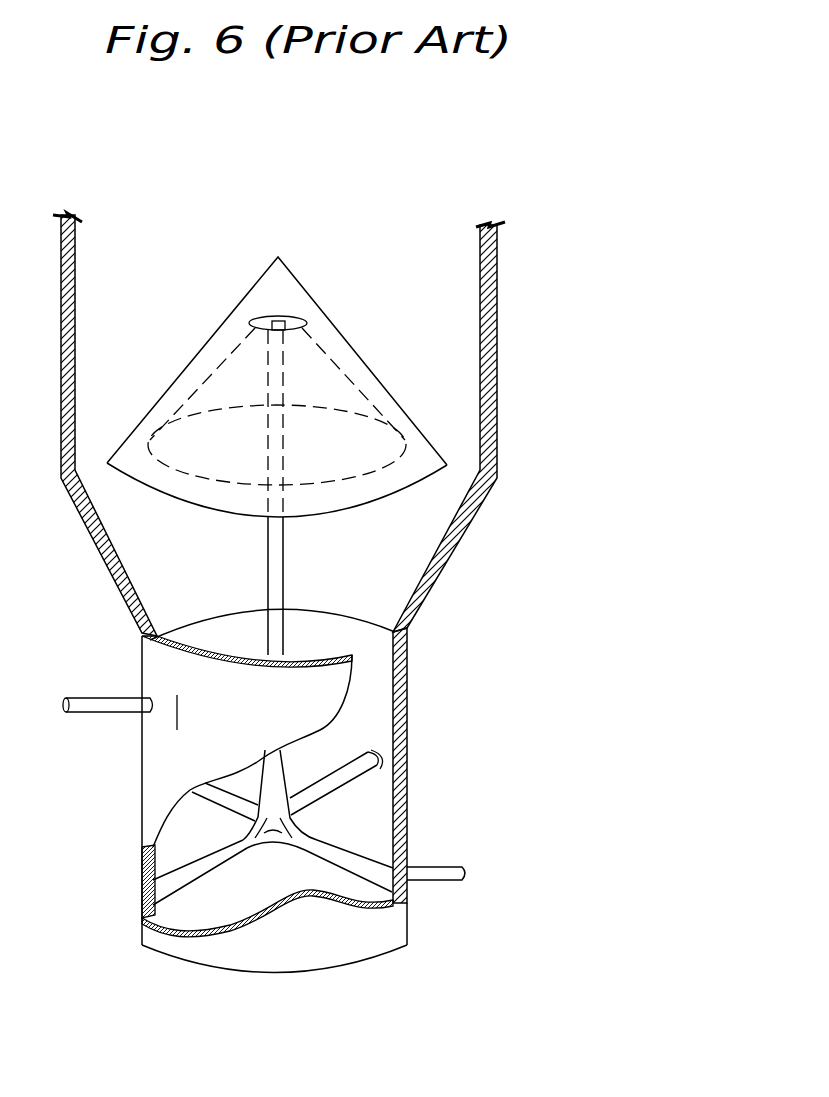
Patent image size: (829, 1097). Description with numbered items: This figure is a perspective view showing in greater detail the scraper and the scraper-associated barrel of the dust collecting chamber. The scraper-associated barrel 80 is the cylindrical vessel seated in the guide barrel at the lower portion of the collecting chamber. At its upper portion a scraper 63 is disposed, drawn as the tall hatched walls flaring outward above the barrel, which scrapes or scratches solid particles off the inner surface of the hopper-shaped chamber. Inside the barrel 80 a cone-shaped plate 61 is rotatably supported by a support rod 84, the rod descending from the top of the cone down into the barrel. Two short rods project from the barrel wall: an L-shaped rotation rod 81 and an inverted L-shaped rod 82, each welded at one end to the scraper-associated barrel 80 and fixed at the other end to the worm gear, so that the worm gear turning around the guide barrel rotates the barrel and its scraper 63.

The cone-shaped plate 61 is at (342, 340).
The scraper 63 is at (498, 432).
The scraper-associated barrel 80 is at (153, 793).
The L-shaped rotation rod 81 is at (428, 870).
The inverted L-shaped rod 82 is at (95, 698).
The support rod 84 is at (283, 570).